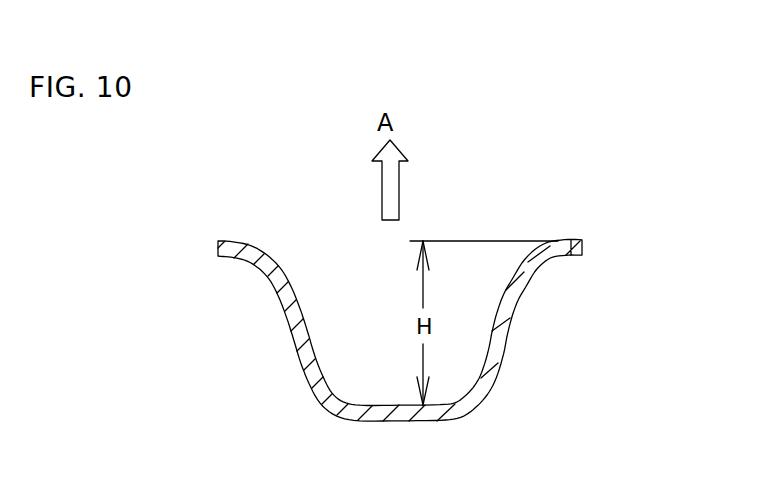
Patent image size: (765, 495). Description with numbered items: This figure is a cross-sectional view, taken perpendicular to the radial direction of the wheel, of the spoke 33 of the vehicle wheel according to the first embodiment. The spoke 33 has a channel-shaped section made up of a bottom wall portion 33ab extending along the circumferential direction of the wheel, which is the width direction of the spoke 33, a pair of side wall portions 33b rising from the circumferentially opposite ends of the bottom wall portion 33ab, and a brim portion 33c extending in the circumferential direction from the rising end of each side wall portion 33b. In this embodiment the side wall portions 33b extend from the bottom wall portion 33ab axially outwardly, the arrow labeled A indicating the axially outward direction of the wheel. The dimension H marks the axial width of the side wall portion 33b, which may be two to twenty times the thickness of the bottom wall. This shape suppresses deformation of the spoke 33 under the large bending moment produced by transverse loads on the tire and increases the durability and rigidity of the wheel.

The spoke 33 is at (401, 321).
The bottom wall portion 33ab is at (420, 417).
The side wall portion 33b is at (298, 324).
The brim portion 33c is at (232, 246).